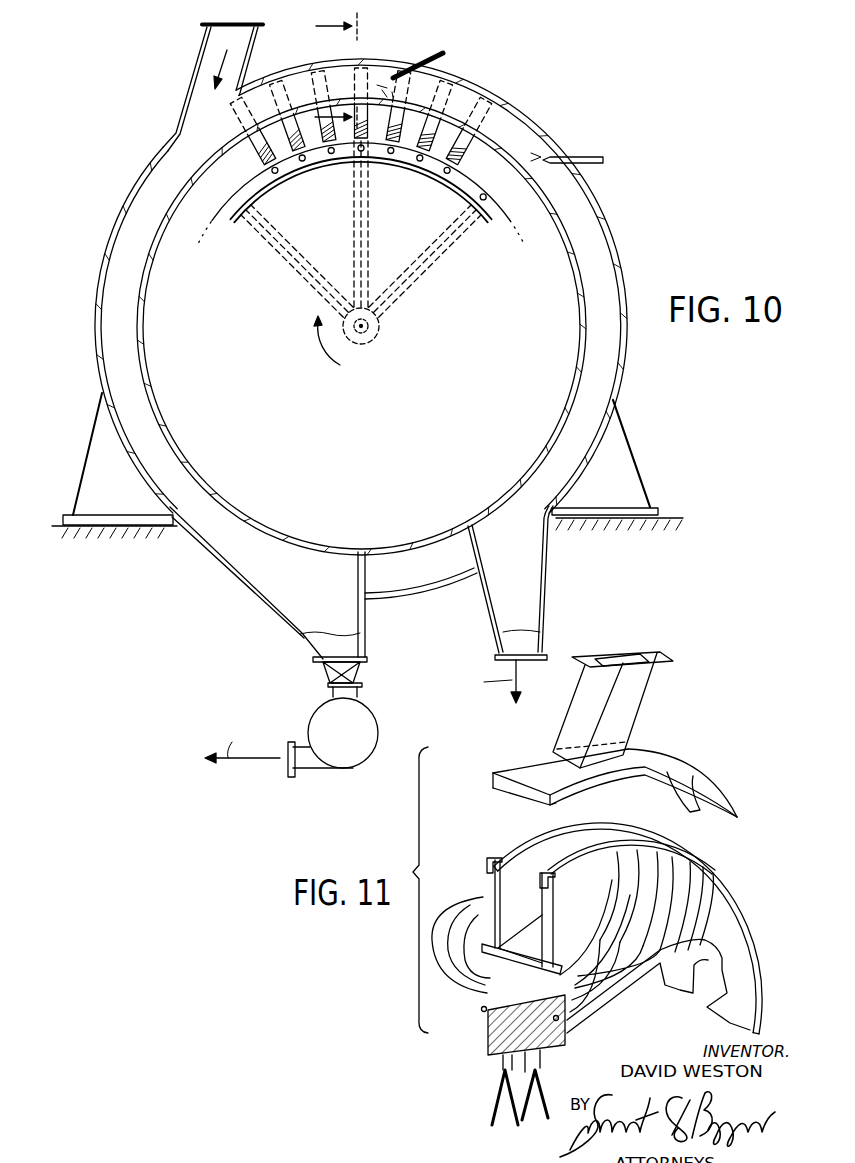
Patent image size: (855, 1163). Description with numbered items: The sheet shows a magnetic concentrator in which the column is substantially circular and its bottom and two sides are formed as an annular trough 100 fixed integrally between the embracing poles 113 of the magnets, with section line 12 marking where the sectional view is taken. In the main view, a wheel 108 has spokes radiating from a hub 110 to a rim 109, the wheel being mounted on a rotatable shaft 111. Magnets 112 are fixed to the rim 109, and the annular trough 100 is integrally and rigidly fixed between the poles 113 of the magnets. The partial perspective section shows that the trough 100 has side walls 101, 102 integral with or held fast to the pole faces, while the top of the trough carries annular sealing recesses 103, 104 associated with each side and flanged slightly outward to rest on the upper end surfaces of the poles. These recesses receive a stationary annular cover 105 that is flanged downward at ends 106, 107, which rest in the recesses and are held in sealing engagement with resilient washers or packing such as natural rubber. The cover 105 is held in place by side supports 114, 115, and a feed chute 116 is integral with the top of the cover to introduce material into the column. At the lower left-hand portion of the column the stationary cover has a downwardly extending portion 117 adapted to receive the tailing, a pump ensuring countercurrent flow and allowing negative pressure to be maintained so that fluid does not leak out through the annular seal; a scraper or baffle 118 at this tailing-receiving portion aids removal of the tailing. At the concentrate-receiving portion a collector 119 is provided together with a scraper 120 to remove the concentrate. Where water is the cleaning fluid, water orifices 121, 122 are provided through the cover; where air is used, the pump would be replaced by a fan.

In FIG. 10, the section line 12— 12 is at (321, 71).
In FIG. 10, the annular trough 100 is at (171, 177).
In FIG. 11, the annular trough 100 is at (520, 866).
In FIG. 11, the side wall 101 is at (497, 910).
In FIG. 11, the side wall 102 is at (548, 924).
In FIG. 11, the annular sealing recess 103 is at (490, 855).
In FIG. 11, the annular sealing recess 104 is at (578, 848).
In FIG. 10, the annular cover 105 is at (599, 203).
In FIG. 11, the annular cover 105 is at (645, 768).
In FIG. 11, the downwardly flanged end 106 is at (493, 781).
In FIG. 11, the downwardly flanged end 107 is at (557, 798).
In FIG. 10, the wheel 108 is at (294, 284).
In FIG. 10, the rim 109 is at (316, 158).
In FIG. 10, the hub 110 is at (380, 336).
In FIG. 10, the rotatable shaft 111 is at (362, 335).
In FIG. 10, the magnets 112 is at (458, 148).
In FIG. 11, the magnets 112 is at (465, 988).
In FIG. 10, the poles 113 is at (484, 100).
In FIG. 10, the side support 114 is at (92, 474).
In FIG. 10, the side support 115 is at (630, 468).
In FIG. 10, the feed chute 116 is at (194, 73).
In FIG. 11, the feed chute 116 is at (642, 655).
In FIG. 10, the downwardly extending portion 117 is at (288, 622).
In FIG. 10, the scraper or baffle 118 is at (357, 565).
In FIG. 10, the collector 119 is at (545, 592).
In FIG. 10, the scraper 120 is at (470, 550).
In FIG. 10, the water orifice 121 is at (442, 53).
In FIG. 10, the water orifice 122 is at (603, 160).